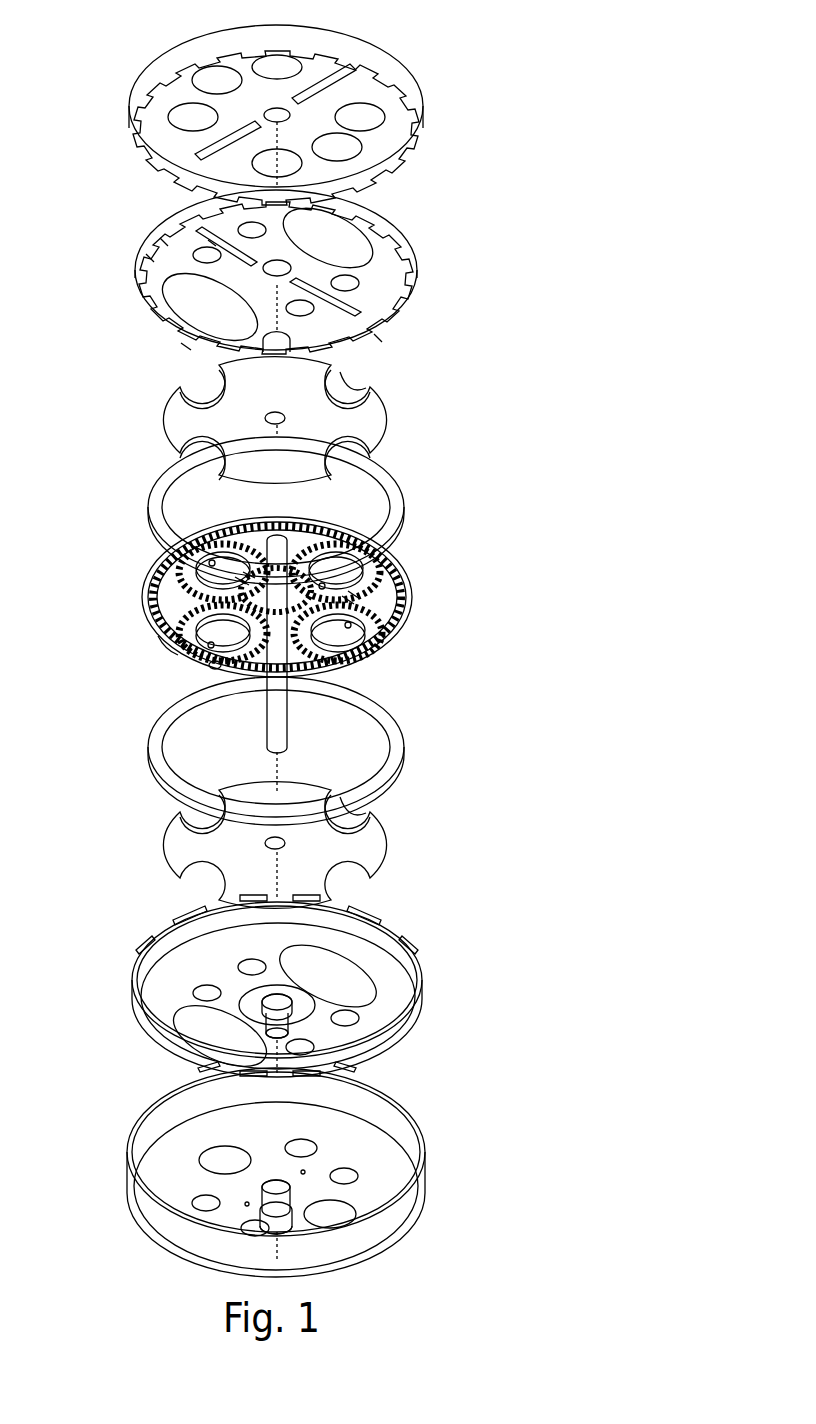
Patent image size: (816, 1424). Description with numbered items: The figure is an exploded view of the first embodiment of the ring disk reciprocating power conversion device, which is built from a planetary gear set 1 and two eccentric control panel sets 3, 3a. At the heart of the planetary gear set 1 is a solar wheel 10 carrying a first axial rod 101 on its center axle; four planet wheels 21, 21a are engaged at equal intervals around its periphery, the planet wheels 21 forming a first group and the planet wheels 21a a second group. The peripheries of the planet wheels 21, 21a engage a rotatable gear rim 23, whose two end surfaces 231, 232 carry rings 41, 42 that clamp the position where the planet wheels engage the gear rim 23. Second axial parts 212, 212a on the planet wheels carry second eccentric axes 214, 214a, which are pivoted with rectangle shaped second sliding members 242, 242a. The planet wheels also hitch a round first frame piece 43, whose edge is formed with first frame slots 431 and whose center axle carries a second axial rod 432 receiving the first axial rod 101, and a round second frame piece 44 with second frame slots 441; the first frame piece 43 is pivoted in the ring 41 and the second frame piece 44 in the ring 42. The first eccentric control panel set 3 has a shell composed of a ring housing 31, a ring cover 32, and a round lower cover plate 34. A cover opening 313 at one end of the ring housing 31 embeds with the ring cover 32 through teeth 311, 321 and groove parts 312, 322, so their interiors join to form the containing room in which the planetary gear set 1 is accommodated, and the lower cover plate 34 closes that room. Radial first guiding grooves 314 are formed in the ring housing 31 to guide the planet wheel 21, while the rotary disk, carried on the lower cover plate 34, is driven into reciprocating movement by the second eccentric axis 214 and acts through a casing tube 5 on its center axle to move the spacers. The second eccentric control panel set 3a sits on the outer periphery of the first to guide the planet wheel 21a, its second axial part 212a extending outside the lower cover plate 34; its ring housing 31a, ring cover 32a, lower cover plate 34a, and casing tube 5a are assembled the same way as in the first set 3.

The planetary gear set 1 is at (291, 633).
The solar wheel 10 is at (213, 667).
The first axial rod 101 is at (284, 716).
The planet wheel 21 is at (172, 583).
The planet wheel 21a is at (387, 605).
The second axial part 212 is at (205, 580).
The second axial part 212a is at (405, 610).
The second eccentric axis 214 is at (222, 592).
The second eccentric axis 214a is at (392, 628).
The second sliding member 242 is at (215, 606).
The second sliding member 242a is at (383, 648).
The gear rim 23 is at (148, 634).
The end surface 231 is at (160, 553).
The end surface 232 is at (165, 642).
The eccentric control panel set 3 is at (272, 976).
The eccentric control panel set 3a is at (269, 1176).
The ring housing 31 is at (403, 240).
The ring housing 31a is at (406, 88).
The teeth 311 is at (150, 258).
The groove part 312 is at (163, 238).
The cover opening 313 is at (378, 338).
The first guiding groove 314 is at (212, 243).
The ring cover 32 is at (280, 973).
The ring cover 32a is at (410, 1140).
The teeth 321 is at (198, 908).
The groove part 322 is at (190, 920).
The lower cover plate 34 is at (385, 1030).
The lower cover plate 34a is at (385, 1212).
The casing tube 5 is at (292, 1030).
The casing tube 5a is at (292, 1222).
The ring 41 is at (162, 488).
The ring 42 is at (165, 780).
The first frame piece 43 is at (378, 426).
The first frame slot 431 is at (347, 382).
The second axial rod 432 is at (185, 347).
The second frame piece 44 is at (376, 850).
The second frame slot 441 is at (342, 882).